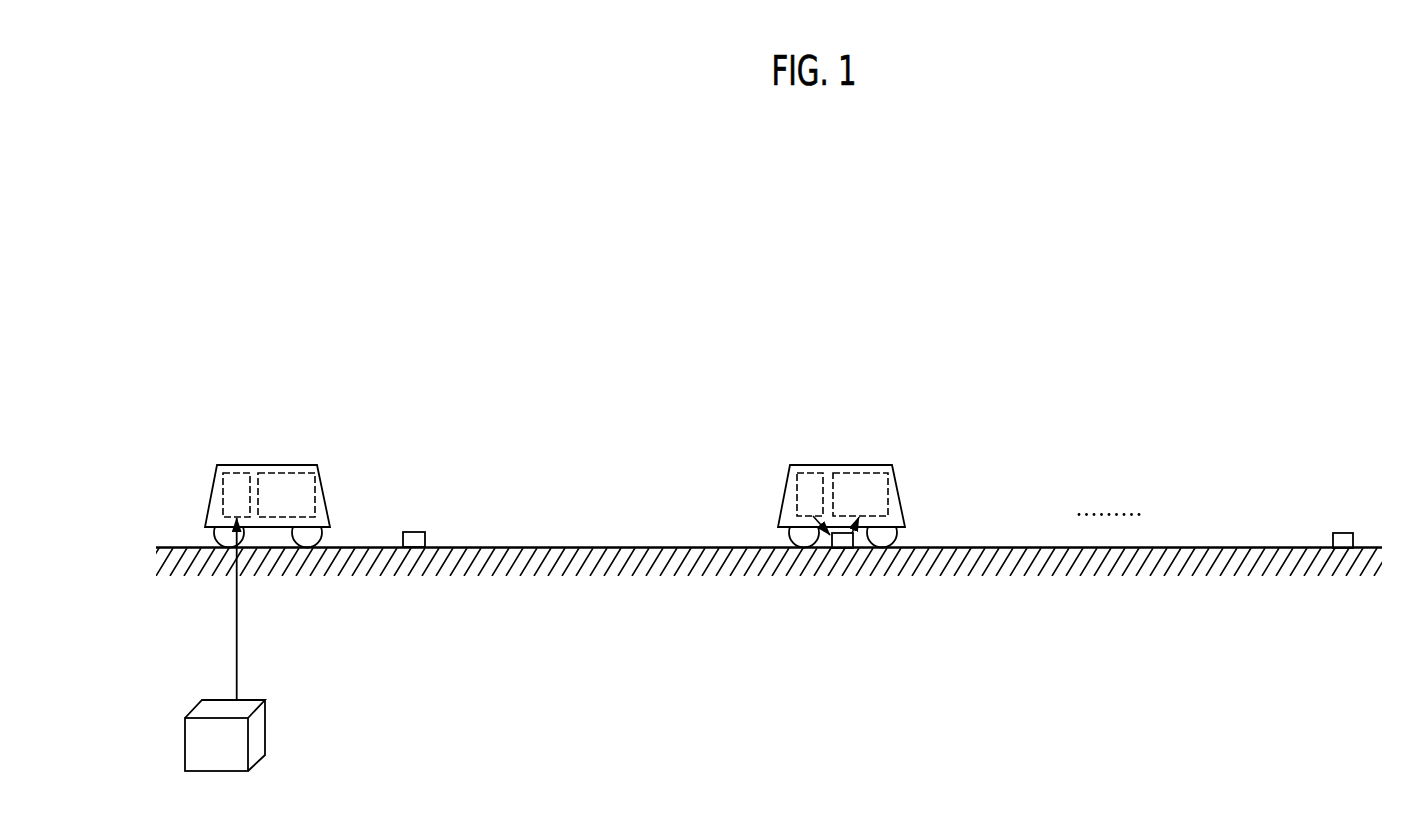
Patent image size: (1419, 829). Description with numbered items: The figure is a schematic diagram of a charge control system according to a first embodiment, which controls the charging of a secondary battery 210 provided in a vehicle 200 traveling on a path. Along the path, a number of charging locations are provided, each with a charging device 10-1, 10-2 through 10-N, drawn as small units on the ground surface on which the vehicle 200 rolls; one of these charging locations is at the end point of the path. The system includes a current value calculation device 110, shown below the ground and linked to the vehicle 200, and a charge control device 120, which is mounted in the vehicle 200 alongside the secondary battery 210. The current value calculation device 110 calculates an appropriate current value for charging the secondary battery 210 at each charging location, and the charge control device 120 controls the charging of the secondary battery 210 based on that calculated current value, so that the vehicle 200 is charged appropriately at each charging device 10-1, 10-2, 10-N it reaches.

The current value calculation device 110 is at (255, 698).
The charge control device 120 is at (230, 472).
The vehicle 200 is at (212, 482).
The secondary battery 210 is at (300, 472).
The charging device 10-1 is at (412, 532).
The charging device 10-2 is at (842, 549).
The charging device 10-N is at (1342, 533).